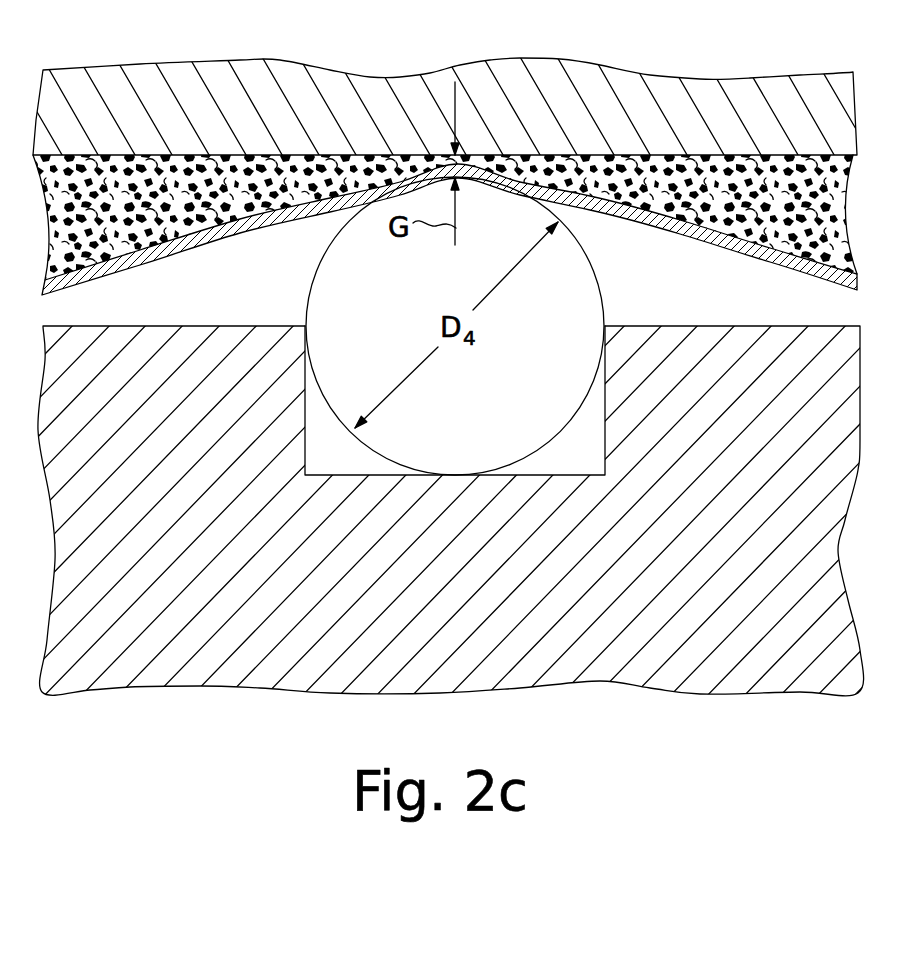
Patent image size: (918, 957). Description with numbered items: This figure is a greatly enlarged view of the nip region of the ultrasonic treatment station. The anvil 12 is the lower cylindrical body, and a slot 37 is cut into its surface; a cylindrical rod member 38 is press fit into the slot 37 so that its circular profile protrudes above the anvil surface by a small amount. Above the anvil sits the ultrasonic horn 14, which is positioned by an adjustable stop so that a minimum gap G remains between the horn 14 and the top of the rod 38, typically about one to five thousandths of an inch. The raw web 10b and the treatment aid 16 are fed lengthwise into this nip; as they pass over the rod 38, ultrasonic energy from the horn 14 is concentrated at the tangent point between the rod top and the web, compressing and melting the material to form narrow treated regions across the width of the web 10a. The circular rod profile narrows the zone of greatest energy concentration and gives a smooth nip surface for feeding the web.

The web 10a is at (773, 206).
The raw web 10b is at (188, 209).
The anvil 12 is at (258, 549).
The ultrasonic horn 14 is at (346, 112).
The treatment aid 16 is at (217, 231).
The slot 37 is at (320, 453).
The rod member 38 is at (386, 308).